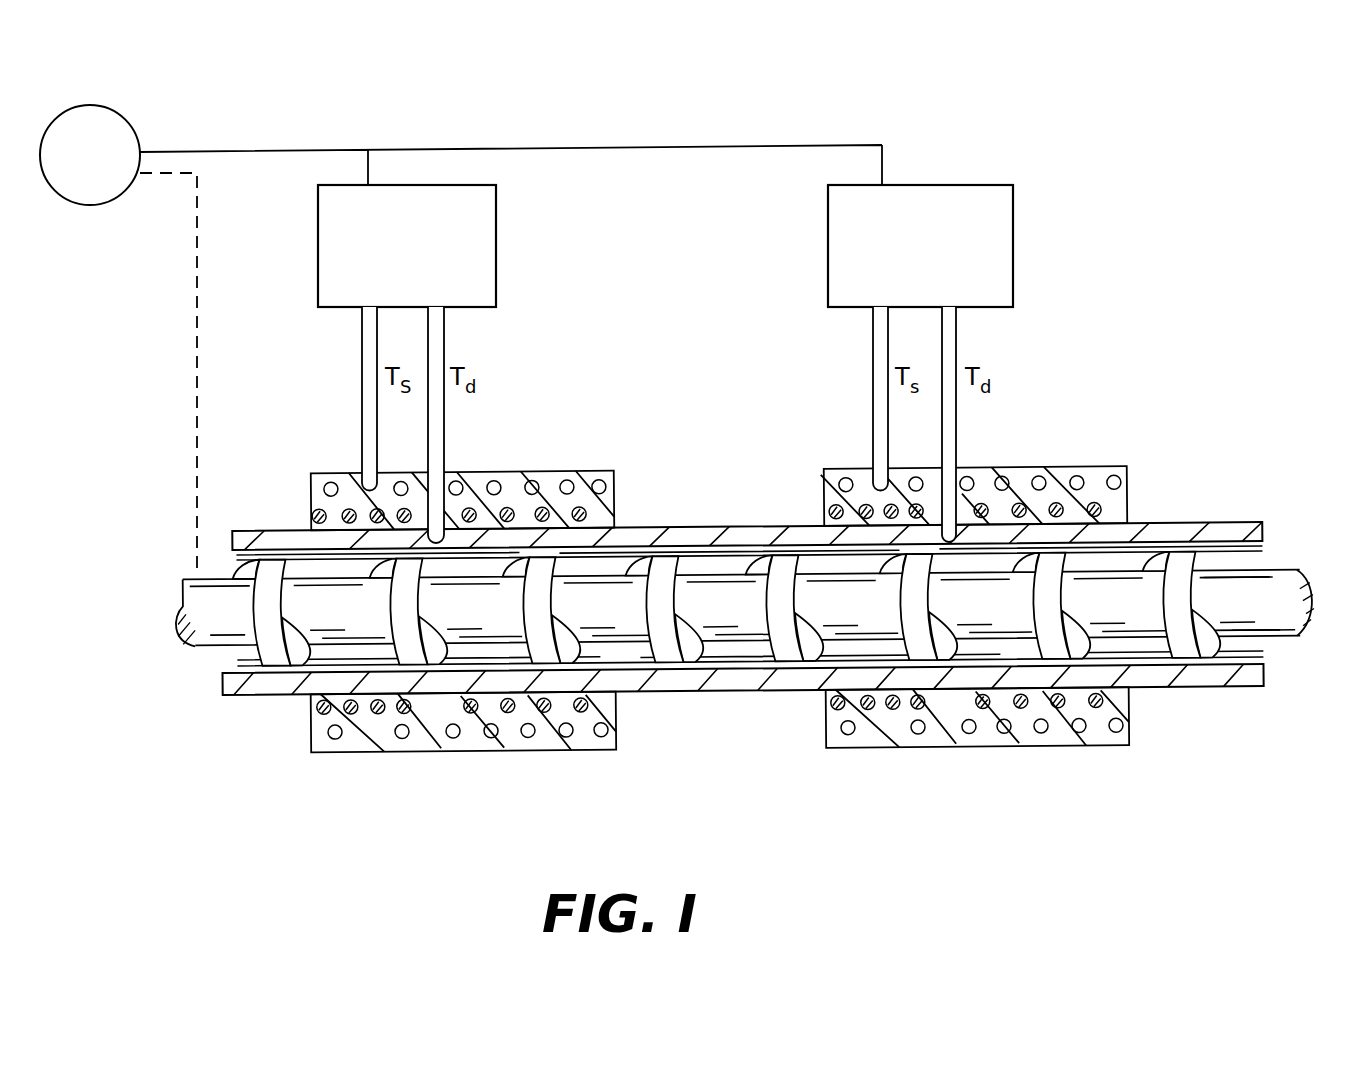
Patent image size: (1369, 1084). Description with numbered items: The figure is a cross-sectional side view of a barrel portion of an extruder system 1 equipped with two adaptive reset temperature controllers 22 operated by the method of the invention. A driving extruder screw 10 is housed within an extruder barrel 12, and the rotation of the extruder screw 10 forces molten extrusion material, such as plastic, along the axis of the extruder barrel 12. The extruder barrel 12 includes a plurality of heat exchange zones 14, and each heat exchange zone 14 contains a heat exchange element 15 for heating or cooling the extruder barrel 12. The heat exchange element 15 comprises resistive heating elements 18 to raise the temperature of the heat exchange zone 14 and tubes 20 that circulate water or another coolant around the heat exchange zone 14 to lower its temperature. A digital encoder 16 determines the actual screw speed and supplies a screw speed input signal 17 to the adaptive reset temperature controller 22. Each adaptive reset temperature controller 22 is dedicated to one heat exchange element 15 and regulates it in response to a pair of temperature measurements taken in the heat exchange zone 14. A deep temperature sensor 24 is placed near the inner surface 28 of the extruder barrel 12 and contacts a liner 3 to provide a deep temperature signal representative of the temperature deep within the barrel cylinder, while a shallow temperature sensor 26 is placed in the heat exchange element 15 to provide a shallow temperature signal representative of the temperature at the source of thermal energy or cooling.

The extruder system 1 is at (753, 628).
The liner 3 is at (1268, 540).
The extruder screw 10 is at (768, 569).
The extruder barrel 12 is at (768, 579).
The heat exchange zone 14 is at (683, 763).
The heat exchange element 15 is at (1023, 478).
The digital encoder 16 is at (104, 106).
The screw speed input signal 17 is at (212, 150).
The resistive heating elements 18 is at (426, 747).
The tubes 20 is at (407, 742).
The adaptive reset temperature controller 22 is at (497, 292).
The deep temperature sensor 24 is at (475, 470).
The shallow temperature sensor 26 is at (362, 483).
The inner surface 28 is at (313, 565).